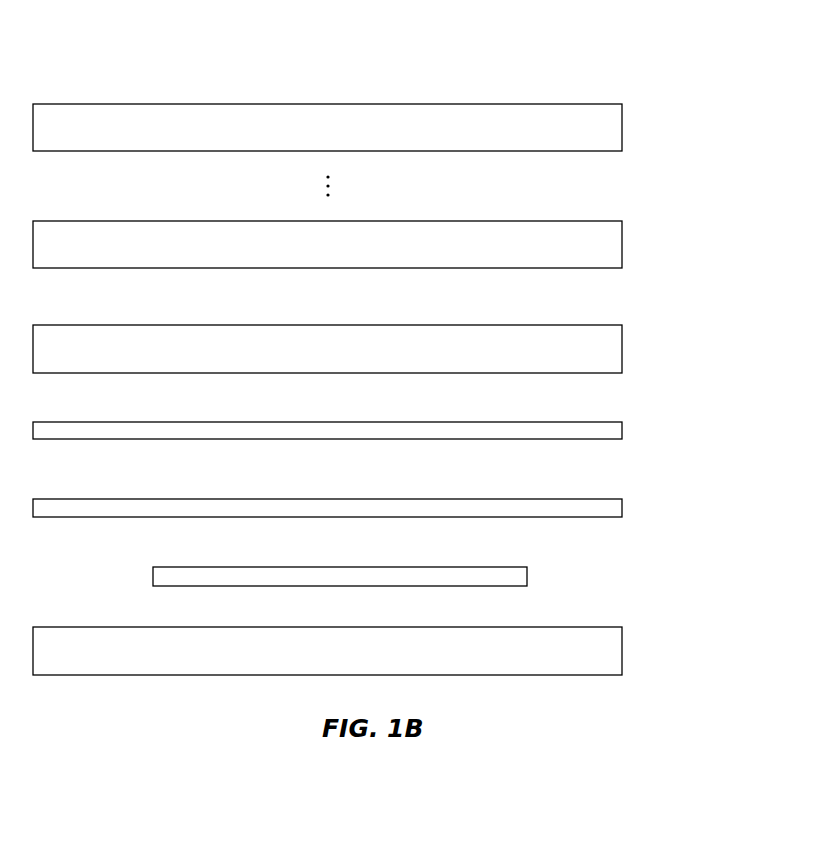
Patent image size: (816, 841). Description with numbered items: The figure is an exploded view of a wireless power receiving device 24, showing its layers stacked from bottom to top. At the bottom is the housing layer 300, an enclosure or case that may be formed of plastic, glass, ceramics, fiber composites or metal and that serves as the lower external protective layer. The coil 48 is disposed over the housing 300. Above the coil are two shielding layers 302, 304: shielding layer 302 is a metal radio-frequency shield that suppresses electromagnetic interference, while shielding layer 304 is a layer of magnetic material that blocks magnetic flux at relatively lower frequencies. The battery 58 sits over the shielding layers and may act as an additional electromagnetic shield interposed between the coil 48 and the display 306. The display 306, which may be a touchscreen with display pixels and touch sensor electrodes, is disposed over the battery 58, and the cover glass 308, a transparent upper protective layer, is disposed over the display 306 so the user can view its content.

The power receiving device 24 is at (585, 54).
The housing layer 300 is at (617, 653).
The coil 48 is at (522, 576).
The shielding layer 302 is at (617, 507).
The shielding layer 304 is at (617, 430).
The battery 58 is at (617, 349).
The display 306 is at (617, 244).
The cover glass 308 is at (617, 127).